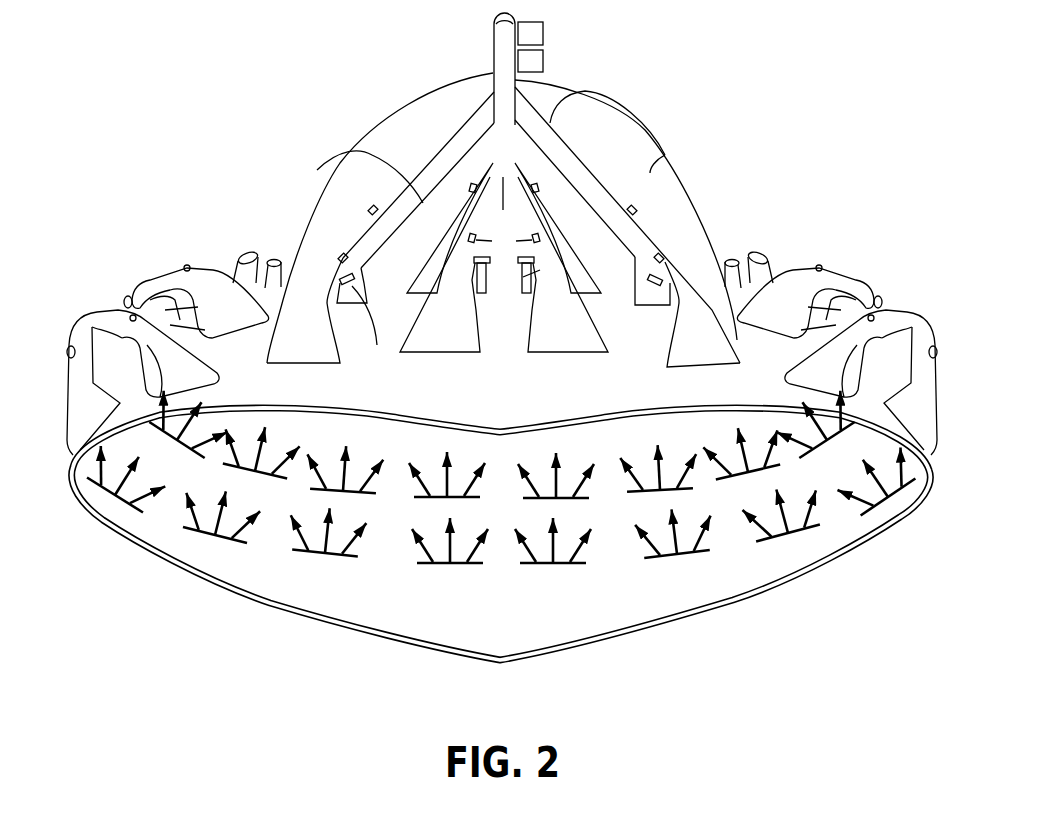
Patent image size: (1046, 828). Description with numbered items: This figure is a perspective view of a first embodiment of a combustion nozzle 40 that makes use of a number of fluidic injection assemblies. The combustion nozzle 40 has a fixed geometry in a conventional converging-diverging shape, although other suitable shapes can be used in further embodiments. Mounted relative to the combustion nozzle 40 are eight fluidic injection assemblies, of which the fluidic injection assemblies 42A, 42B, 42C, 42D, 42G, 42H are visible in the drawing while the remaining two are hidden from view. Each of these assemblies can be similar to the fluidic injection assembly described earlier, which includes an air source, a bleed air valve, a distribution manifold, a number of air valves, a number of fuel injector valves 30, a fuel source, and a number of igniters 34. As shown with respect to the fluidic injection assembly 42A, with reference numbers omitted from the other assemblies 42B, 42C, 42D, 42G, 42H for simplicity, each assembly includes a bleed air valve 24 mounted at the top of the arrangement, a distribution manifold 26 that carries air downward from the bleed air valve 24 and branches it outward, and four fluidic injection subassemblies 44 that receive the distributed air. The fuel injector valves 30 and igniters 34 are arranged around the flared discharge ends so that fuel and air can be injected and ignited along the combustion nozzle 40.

The bleed air valve 24 is at (545, 28).
The distribution manifold 26 is at (493, 68).
The fuel injector valve 30 is at (343, 258).
The igniter 34 is at (377, 345).
The combustion nozzle 40 is at (665, 155).
The fluidic injection assembly 42A is at (490, 46).
The fluidic injection assembly 42B is at (553, 93).
The fluidic injection assembly 42C is at (903, 310).
The fluidic injection assembly 42D is at (860, 283).
The fluidic injection assembly 42G is at (93, 317).
The fluidic injection assembly 42H is at (148, 283).
The fluidic injection subassembly 44 is at (317, 170).